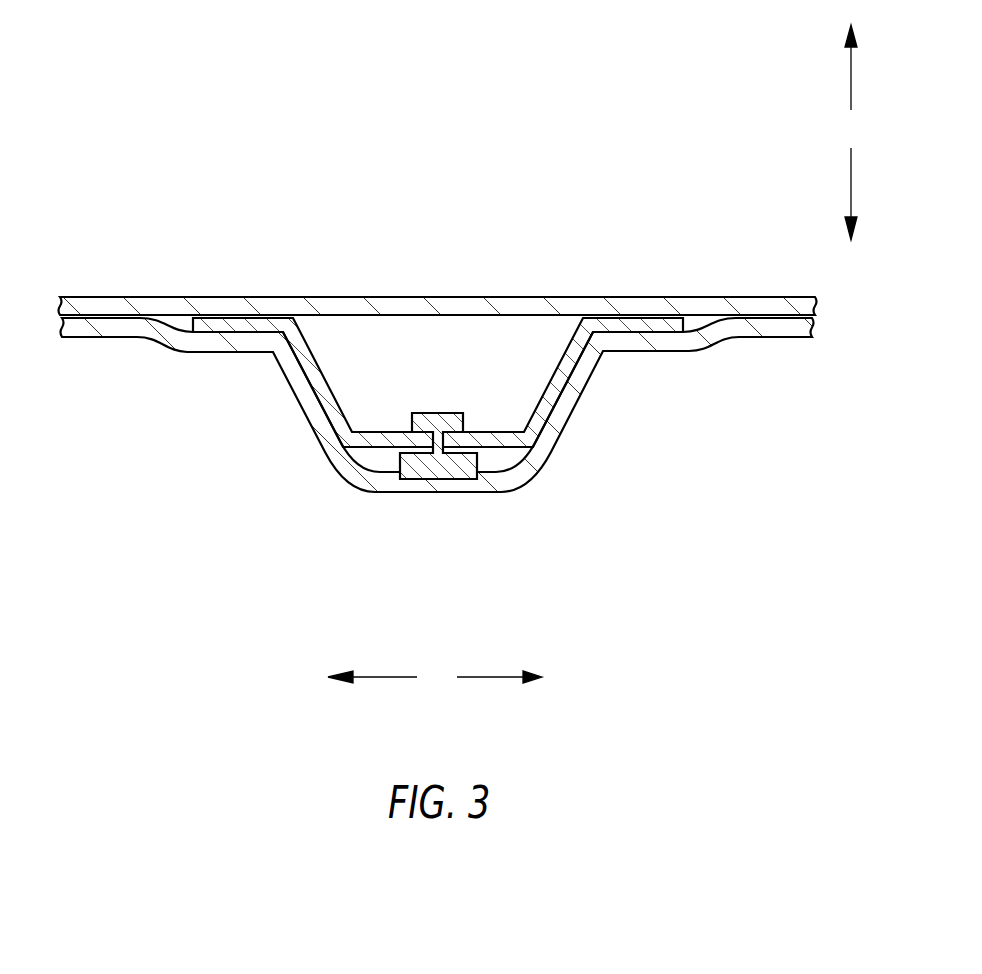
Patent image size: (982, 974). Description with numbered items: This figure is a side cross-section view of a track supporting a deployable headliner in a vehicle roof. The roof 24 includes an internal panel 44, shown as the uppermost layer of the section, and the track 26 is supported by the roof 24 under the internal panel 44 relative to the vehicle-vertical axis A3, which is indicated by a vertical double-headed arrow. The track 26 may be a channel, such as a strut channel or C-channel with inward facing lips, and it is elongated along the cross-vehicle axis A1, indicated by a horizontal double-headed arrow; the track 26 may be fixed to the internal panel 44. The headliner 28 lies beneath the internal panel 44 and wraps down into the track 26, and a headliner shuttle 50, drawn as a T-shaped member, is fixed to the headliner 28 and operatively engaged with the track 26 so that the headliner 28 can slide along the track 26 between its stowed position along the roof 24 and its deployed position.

The roof 24 is at (489, 334).
The internal panel 44 is at (505, 297).
The headliner 28 is at (185, 352).
The track 26 is at (490, 448).
The headliner shuttle 50 is at (422, 480).
The cross-vehicle axis A1 is at (435, 675).
The vehicle-vertical axis A3 is at (850, 132).